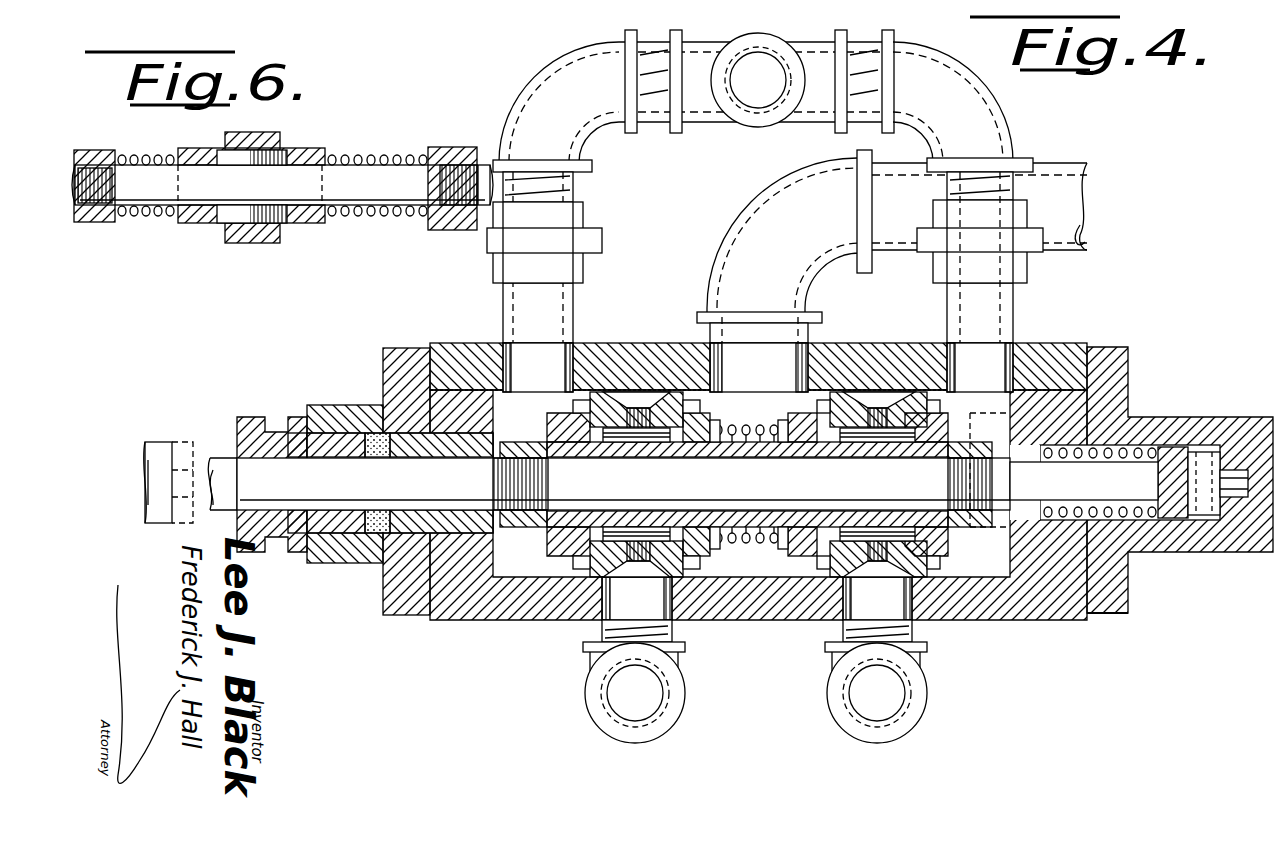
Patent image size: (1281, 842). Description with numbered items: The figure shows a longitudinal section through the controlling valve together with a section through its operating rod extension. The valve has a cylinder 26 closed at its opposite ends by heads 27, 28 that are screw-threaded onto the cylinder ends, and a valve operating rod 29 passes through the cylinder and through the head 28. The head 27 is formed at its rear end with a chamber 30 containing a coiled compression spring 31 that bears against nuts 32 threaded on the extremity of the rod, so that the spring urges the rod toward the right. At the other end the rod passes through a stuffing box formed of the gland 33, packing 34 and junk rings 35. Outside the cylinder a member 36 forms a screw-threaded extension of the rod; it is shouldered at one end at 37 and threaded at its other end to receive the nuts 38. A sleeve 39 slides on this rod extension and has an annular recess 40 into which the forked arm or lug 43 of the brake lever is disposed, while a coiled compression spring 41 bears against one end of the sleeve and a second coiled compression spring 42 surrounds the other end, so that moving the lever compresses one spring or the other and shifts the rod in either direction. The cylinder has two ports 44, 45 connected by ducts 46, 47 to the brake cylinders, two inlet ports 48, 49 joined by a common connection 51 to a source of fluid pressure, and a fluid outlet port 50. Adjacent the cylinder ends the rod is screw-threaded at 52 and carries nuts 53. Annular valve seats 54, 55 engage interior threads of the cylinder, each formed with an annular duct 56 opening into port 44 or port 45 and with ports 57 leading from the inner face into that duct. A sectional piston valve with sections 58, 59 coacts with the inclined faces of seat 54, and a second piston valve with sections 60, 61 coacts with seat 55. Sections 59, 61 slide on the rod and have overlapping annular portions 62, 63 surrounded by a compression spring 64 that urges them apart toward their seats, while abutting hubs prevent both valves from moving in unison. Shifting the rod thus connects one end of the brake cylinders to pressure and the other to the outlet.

In FIG. 4, the cylinder 26 is at (544, 620).
In FIG. 4, the head 27 is at (1110, 617).
In FIG. 4, the head 28 is at (410, 347).
In FIG. 6, the valve operating rod 29 is at (490, 150).
In FIG. 4, the valve operating rod 29 is at (184, 466).
In FIG. 4, the chamber 30 is at (1185, 450).
In FIG. 4, the coiled compression spring 31 is at (1128, 452).
In FIG. 4, the nuts 32 is at (1186, 519).
In FIG. 4, the gland 33 is at (280, 537).
In FIG. 4, the stuffing box 34 is at (445, 617).
In FIG. 4, the junk rings 35 is at (363, 560).
In FIG. 6, the member 36 is at (282, 185).
In FIG. 4, the member 36 is at (136, 454).
In FIG. 6, the shoulder 37 is at (455, 147).
In FIG. 4, the shoulder 37 is at (160, 441).
In FIG. 6, the nuts 38 is at (88, 150).
In FIG. 6, the sleeve 39 is at (210, 224).
In FIG. 6, the annular recess 40 is at (258, 244).
In FIG. 6, the coiled compression spring 41 is at (144, 218).
In FIG. 6, the coiled compression spring 42 is at (381, 156).
In FIG. 6, the arm or lug 43 is at (265, 133).
In FIG. 4, the port 44 is at (637, 598).
In FIG. 4, the port 45 is at (877, 598).
In FIG. 4, the duct 46 is at (648, 713).
In FIG. 4, the duct 47 is at (872, 713).
In FIG. 4, the inlet port 48 is at (553, 192).
In FIG. 4, the inlet port 49 is at (979, 192).
In FIG. 4, the fluid outlet port 50 is at (762, 350).
In FIG. 4, the common connection 51 is at (762, 72).
In FIG. 4, the screw-threads 52 is at (524, 527).
In FIG. 4, the nuts 53 is at (535, 442).
In FIG. 4, the annular valve seat 54 is at (598, 404).
In FIG. 4, the annular valve seat 55 is at (863, 362).
In FIG. 4, the annular duct 56 is at (632, 404).
In FIG. 4, the ports 57 is at (640, 410).
In FIG. 4, the piston valve section 58 is at (592, 454).
In FIG. 4, the piston valve section 59 is at (694, 452).
In FIG. 4, the piston valve section 60 is at (903, 452).
In FIG. 4, the piston valve section 61 is at (802, 452).
In FIG. 4, the overlapping annular portion 62 is at (750, 447).
In FIG. 4, the overlapping annular portion 63 is at (792, 447).
In FIG. 4, the compression spring 64 is at (748, 424).